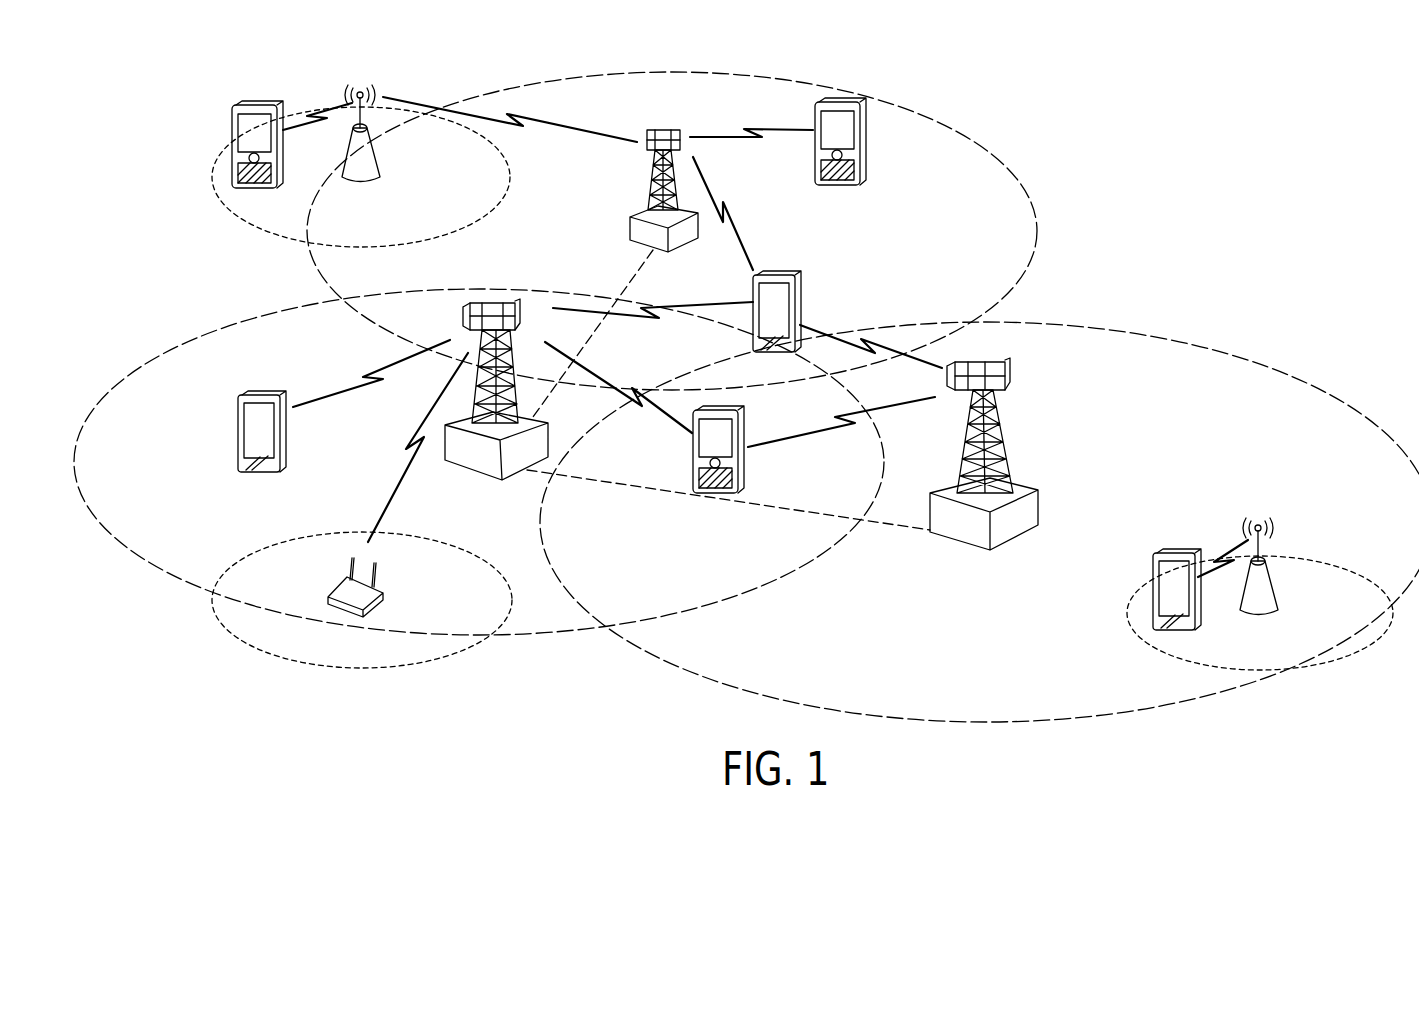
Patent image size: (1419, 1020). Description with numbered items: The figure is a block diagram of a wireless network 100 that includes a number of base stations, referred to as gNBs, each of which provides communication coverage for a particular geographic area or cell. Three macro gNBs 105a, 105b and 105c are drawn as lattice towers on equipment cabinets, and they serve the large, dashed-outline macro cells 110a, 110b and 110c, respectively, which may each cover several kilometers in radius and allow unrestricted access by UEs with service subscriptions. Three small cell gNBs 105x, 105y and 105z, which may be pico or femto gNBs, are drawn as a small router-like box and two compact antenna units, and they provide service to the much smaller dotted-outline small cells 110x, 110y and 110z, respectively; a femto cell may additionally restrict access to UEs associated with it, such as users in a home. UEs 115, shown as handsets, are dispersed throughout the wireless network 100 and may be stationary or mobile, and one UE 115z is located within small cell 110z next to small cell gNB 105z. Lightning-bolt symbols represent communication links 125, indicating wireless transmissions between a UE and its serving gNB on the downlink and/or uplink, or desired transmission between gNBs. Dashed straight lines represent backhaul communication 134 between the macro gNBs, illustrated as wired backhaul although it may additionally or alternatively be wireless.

The wireless network 100 is at (1143, 118).
The macro gNB 105a is at (482, 479).
The macro gNB 105b is at (632, 222).
The macro gNB 105c is at (1020, 547).
The small cell gNB 105x is at (382, 602).
The small cell gNB 105y is at (378, 178).
The small cell gNB 105z is at (1277, 610).
The macro cell 110a is at (190, 333).
The macro cell 110b is at (858, 92).
The macro cell 110c is at (1197, 342).
The small cell 110x is at (288, 663).
The small cell 110y is at (260, 230).
The small cell 110z is at (1358, 663).
The UE 115 is at (232, 115).
The UE 115z is at (1153, 570).
The communication link 125 is at (313, 107).
The backhaul communication 134 is at (637, 270).